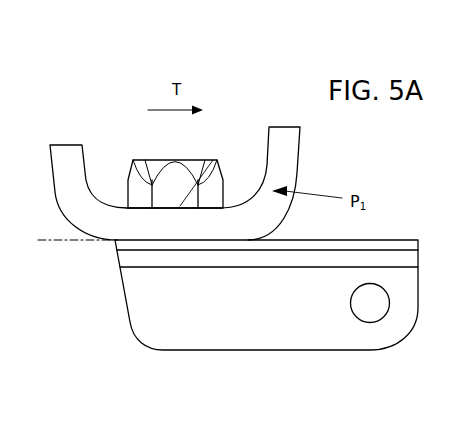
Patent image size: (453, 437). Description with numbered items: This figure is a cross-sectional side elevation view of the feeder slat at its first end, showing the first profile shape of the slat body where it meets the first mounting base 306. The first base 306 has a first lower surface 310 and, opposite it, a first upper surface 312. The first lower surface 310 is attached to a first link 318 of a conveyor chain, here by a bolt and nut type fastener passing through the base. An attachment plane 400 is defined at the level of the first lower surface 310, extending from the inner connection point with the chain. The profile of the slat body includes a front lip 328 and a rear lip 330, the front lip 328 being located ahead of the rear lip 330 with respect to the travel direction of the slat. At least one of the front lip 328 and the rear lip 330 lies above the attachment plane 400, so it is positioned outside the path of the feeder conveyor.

The rear lip 330 is at (63, 170).
The first mounting base 306 is at (156, 194).
The first upper surface 312 is at (213, 160).
The front lip 328 is at (285, 135).
The attachment plane 400 is at (88, 242).
The first lower surface 310 is at (172, 242).
The first link 318 is at (215, 325).